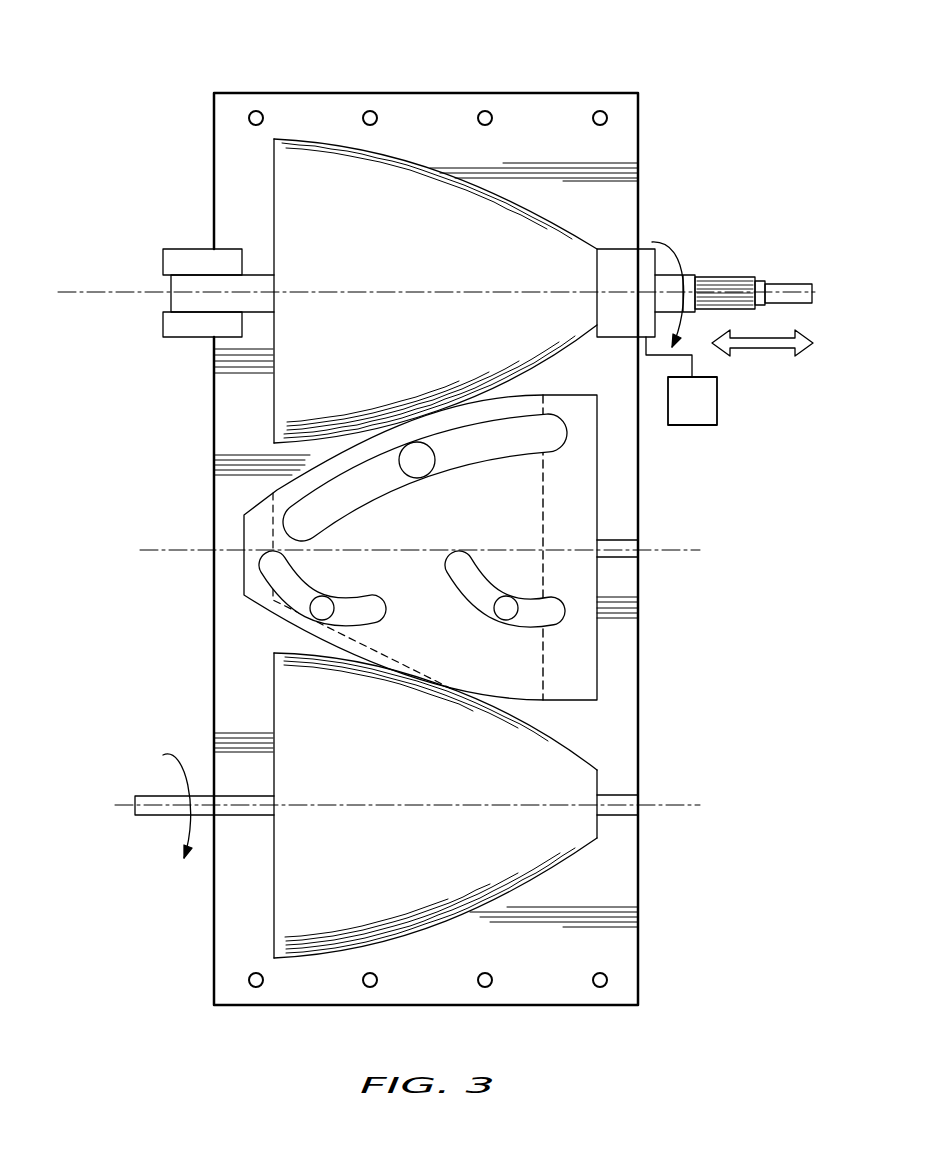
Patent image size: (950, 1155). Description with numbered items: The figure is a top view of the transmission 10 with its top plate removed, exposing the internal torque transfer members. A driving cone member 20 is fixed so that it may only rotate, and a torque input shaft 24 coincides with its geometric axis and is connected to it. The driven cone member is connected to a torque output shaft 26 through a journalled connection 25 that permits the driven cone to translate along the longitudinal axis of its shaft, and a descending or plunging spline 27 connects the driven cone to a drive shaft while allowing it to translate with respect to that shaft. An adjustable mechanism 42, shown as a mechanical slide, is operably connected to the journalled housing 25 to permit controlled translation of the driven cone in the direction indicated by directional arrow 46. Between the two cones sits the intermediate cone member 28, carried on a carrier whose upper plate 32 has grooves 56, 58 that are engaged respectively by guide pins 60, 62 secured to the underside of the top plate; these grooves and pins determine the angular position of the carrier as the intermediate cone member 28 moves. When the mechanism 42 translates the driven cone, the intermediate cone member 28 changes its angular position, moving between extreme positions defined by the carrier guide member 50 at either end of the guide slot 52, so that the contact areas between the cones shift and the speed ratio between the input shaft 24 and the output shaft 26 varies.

The transmission assembly 10 is at (102, 55).
The cone member 20 is at (436, 790).
The torque input shaft 24 is at (150, 792).
The journalled connection 25 is at (643, 248).
The torque output shaft 26 is at (685, 277).
The plunging spline 27 is at (742, 275).
The intermediate cone member 28 is at (257, 525).
The upper plate 32 is at (522, 472).
The adjustable mechanism 42 is at (705, 412).
The directional arrow 46 is at (762, 349).
The guide member 50 is at (418, 461).
The guide slot 52 is at (355, 472).
The groove 56 is at (277, 590).
The groove 58 is at (470, 587).
The guide pin 60 is at (323, 608).
The guide pin 62 is at (506, 608).